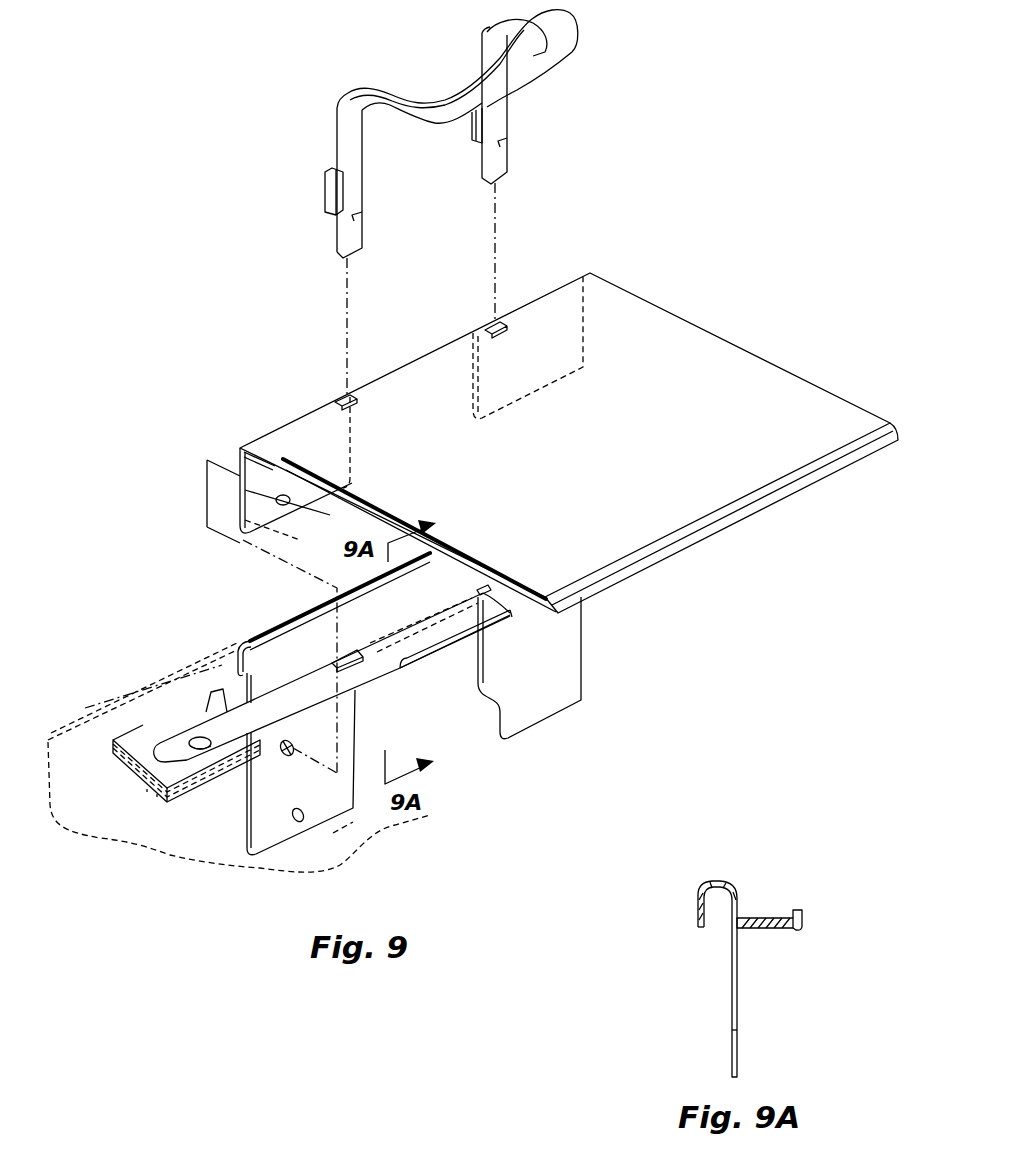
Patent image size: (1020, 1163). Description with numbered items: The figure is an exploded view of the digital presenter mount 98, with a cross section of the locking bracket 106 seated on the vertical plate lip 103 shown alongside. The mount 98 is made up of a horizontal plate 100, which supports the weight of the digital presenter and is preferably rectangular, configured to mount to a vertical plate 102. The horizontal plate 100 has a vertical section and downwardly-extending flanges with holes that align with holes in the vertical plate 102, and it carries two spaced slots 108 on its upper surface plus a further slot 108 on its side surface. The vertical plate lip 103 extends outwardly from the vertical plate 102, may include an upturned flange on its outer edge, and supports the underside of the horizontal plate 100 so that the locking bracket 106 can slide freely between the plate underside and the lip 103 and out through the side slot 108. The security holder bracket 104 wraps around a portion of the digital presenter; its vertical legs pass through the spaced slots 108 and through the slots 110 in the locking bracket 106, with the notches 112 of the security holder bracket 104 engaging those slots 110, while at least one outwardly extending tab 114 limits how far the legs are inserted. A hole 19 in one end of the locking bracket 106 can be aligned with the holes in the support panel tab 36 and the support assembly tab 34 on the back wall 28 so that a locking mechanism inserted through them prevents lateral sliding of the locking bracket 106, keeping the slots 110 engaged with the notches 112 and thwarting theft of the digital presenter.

In FIG. 9, the hole 19 is at (193, 740).
In FIG. 9, the back wall 28 is at (239, 757).
In FIG. 9, the support assembly tab 34 is at (157, 795).
In FIG. 9, the support panel tab 36 is at (147, 790).
In FIG. 9, the digital presenter mount 98 is at (690, 274).
In FIG. 9, the horizontal plate 100 is at (274, 428).
In FIG. 9, the vertical plate 102 is at (258, 632).
In FIG. 9A, the vertical plate 102 is at (718, 880).
In FIG. 9, the vertical plate lip 103 is at (437, 658).
In FIG. 9A, the vertical plate lip 103 is at (716, 991).
In FIG. 9, the security holder bracket 104 is at (323, 169).
In FIG. 9, the locking bracket 106 is at (213, 710).
In FIG. 9A, the locking bracket 106 is at (787, 948).
In FIG. 9, the slot 108 is at (492, 322).
In FIG. 9, the slot 110 is at (485, 596).
In FIG. 9, the notch 112 is at (356, 215).
In FIG. 9, the outwardly extending tab 114 is at (324, 190).